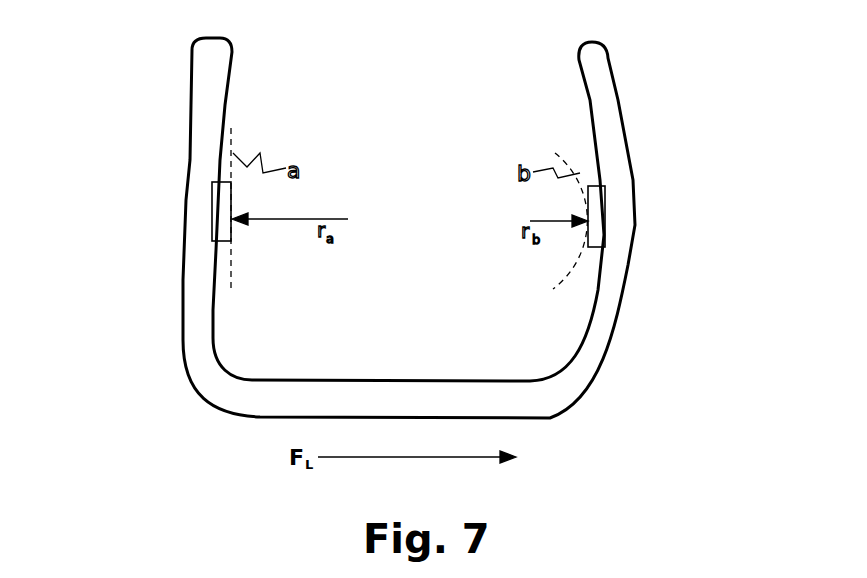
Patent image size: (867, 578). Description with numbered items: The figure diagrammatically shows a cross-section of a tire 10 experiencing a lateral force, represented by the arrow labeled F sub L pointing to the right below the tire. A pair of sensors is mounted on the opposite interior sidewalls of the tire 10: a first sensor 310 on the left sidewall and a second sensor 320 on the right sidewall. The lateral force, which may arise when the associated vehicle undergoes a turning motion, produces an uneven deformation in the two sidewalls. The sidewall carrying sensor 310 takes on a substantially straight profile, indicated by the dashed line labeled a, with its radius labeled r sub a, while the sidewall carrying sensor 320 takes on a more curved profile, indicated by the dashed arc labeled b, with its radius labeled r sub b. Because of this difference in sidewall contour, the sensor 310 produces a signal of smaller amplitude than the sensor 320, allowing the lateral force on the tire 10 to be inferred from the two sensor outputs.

The tire 10 is at (192, 45).
The sensor 310 is at (223, 180).
The sensor 320 is at (599, 184).